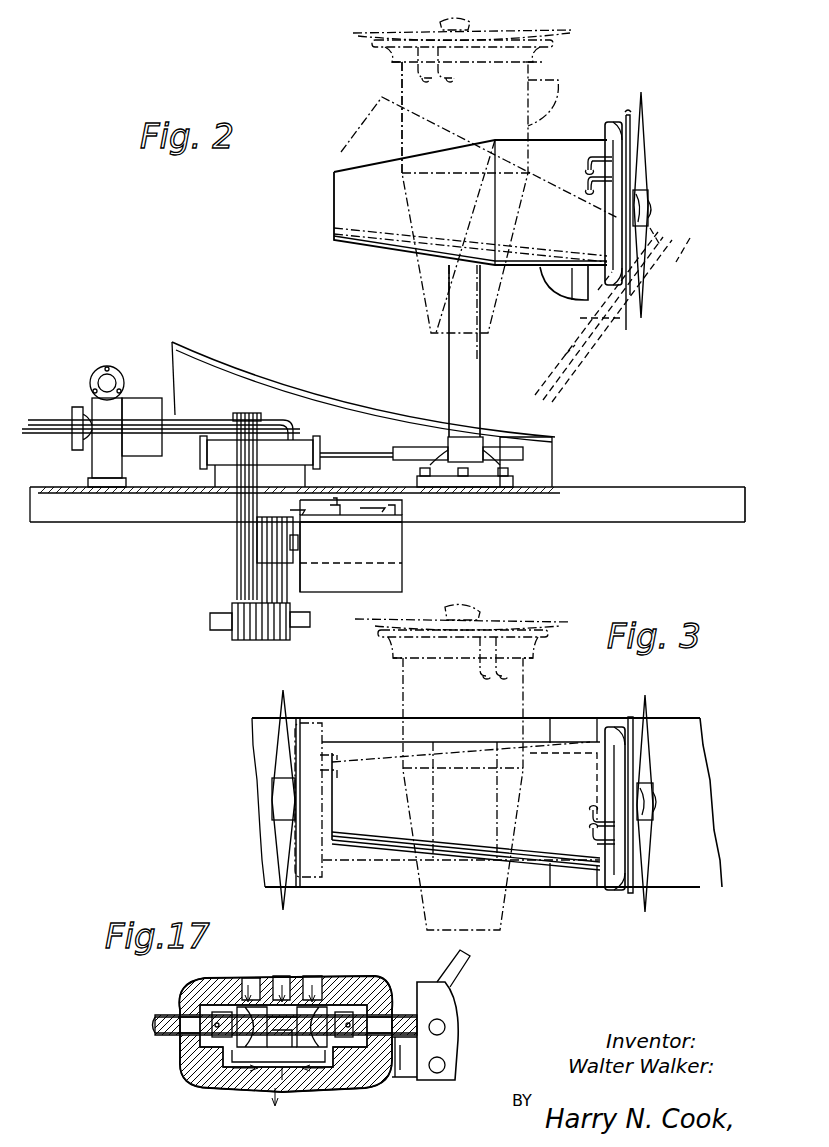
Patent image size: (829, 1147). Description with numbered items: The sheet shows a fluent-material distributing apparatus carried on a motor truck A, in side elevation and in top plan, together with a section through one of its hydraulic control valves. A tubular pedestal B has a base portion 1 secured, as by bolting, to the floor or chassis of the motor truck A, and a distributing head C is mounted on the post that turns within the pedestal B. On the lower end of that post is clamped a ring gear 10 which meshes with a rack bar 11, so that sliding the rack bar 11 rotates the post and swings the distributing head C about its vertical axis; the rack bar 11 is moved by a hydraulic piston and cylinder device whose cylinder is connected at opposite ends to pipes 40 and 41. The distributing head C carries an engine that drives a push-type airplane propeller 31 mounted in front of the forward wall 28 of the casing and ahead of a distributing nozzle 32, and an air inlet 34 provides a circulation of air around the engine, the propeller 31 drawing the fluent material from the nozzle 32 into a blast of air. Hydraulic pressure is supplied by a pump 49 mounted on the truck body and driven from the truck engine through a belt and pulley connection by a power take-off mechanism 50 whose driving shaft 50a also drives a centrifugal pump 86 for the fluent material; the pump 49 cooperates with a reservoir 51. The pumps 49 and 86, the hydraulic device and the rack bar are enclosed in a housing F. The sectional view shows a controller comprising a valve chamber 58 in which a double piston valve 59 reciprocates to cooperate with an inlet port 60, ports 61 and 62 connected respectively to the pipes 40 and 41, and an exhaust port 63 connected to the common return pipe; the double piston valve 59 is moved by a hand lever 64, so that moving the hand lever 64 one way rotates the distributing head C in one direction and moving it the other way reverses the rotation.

In FIG. 2, the base portion 1 is at (498, 448).
In FIG. 2, the ring gear 10 is at (266, 440).
In FIG. 2, the rack bar 11 is at (420, 446).
In FIG. 2, the forward wall 28 is at (598, 226).
In FIG. 3, the forward wall 28 is at (612, 792).
In FIG. 2, the airplane propeller 31 is at (645, 175).
In FIG. 3, the airplane propeller 31 is at (648, 732).
In FIG. 2, the distributing nozzle 32 is at (632, 318).
In FIG. 3, the distributing nozzle 32 is at (630, 715).
In FIG. 2, the air inlet 34 is at (565, 296).
In FIG. 2, the pipe 40 is at (60, 420).
In FIG. 2, the pipe 41 is at (55, 435).
In FIG. 2, the pump 49 is at (400, 558).
In FIG. 2, the power take-off mechanism 50 is at (258, 641).
In FIG. 2, the driving shaft 50a is at (210, 622).
In FIG. 2, the reservoir 51 is at (385, 588).
In FIG. 17, the valve chamber 58 is at (368, 1003).
In FIG. 17, the double piston valve 59 is at (228, 1012).
In FIG. 17, the inlet port 60 is at (283, 976).
In FIG. 17, the port 61 is at (256, 978).
In FIG. 17, the port 62 is at (318, 978).
In FIG. 17, the exhaust port 63 is at (270, 1108).
In FIG. 17, the hand lever 64 is at (452, 960).
In FIG. 2, the centrifugal pump 86 is at (95, 395).
In FIG. 2, the motor truck A is at (646, 481).
In FIG. 3, the motor truck A is at (691, 732).
In FIG. 2, the pedestal B is at (450, 370).
In FIG. 2, the distributing head C is at (400, 73).
In FIG. 3, the distributing head C is at (582, 745).
In FIG. 2, the housing F is at (355, 412).
In FIG. 3, the housing F is at (390, 726).